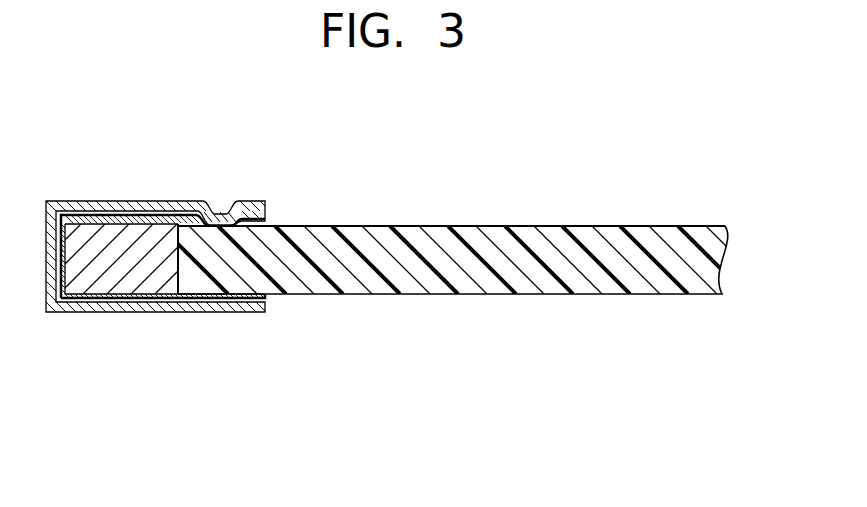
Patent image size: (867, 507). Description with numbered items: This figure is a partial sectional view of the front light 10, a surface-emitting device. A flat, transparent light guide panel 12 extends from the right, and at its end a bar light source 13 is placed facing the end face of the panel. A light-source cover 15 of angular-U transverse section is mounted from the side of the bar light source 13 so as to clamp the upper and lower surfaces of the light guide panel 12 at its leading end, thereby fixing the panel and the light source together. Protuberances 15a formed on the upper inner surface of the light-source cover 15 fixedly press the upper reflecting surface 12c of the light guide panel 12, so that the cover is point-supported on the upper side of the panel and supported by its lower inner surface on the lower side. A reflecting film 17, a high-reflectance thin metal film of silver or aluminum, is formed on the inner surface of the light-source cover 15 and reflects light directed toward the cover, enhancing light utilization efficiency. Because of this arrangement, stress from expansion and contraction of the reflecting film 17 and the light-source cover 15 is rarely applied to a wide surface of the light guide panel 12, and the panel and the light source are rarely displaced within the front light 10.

The front light 10 is at (563, 208).
The light guide panel 12 is at (557, 270).
The reflecting surface 12c is at (403, 226).
The bar light source 13 is at (110, 244).
The light-source cover 15 is at (243, 200).
The protuberance 15a is at (196, 227).
The reflecting film 17 is at (266, 219).